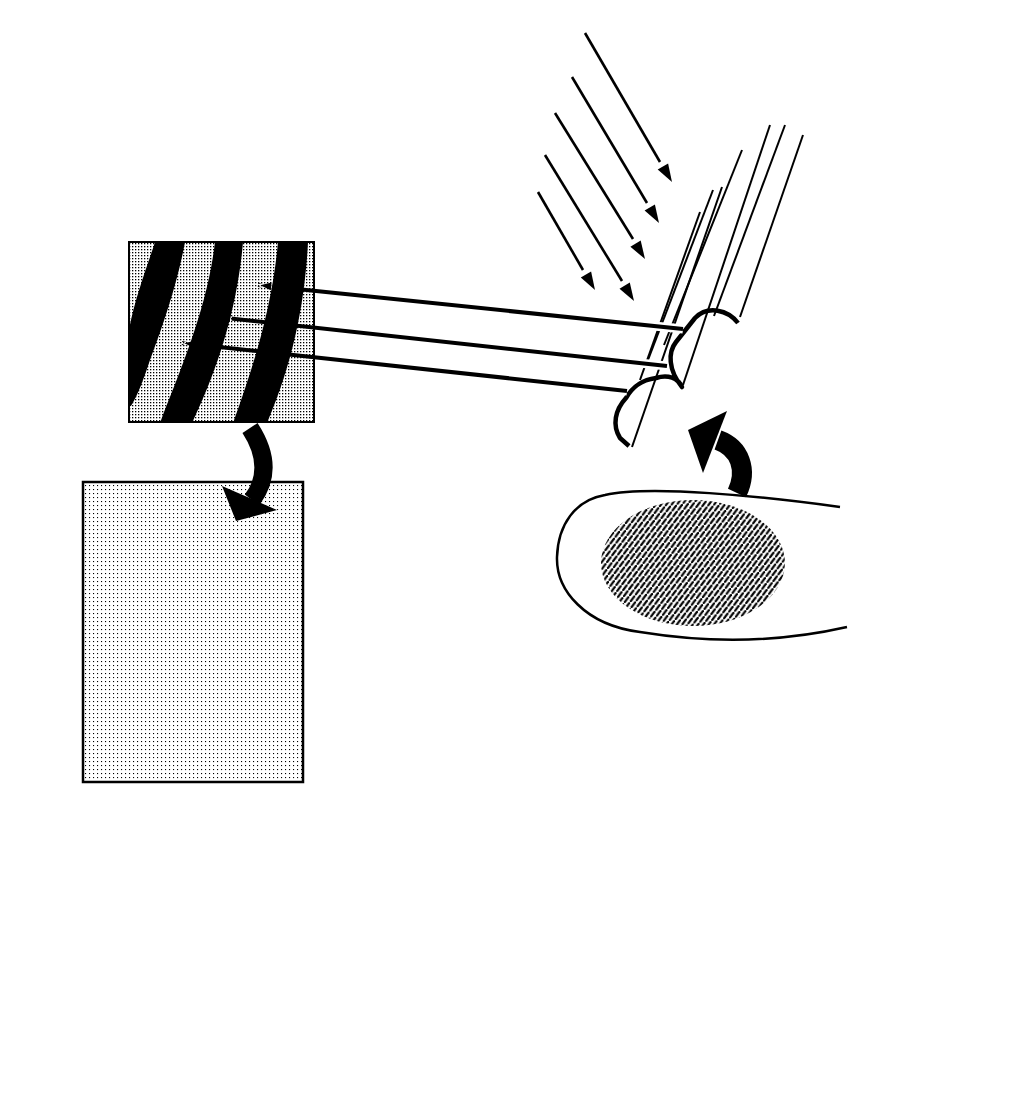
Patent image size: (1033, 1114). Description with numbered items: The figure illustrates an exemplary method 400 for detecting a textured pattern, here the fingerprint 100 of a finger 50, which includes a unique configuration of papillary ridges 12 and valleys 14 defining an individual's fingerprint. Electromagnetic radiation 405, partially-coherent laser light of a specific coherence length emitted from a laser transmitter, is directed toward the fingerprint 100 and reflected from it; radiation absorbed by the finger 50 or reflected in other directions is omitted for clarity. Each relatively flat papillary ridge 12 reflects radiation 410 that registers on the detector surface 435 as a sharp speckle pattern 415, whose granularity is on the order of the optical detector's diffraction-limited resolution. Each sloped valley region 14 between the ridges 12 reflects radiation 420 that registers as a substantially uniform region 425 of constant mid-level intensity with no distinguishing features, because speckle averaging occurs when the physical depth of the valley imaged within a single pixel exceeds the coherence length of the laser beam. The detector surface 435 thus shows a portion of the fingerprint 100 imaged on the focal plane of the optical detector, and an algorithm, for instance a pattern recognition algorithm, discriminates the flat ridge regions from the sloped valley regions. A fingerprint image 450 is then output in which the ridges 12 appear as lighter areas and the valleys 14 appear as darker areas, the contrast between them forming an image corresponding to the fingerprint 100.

The method 400 is at (182, 75).
The electromagnetic radiation 405 is at (583, 13).
The papillary ridges 12 is at (711, 237).
The valleys 14 is at (684, 383).
The radiation reflected from ridge 410 is at (457, 300).
The radiation reflected from valley 420 is at (533, 357).
The detector surface 435 is at (129, 256).
The sharp speckle pattern 415 is at (257, 240).
The substantially uniform region 425 is at (174, 432).
The fingerprint image 450 is at (304, 622).
The finger 50 is at (647, 632).
The fingerprint 100 is at (770, 603).